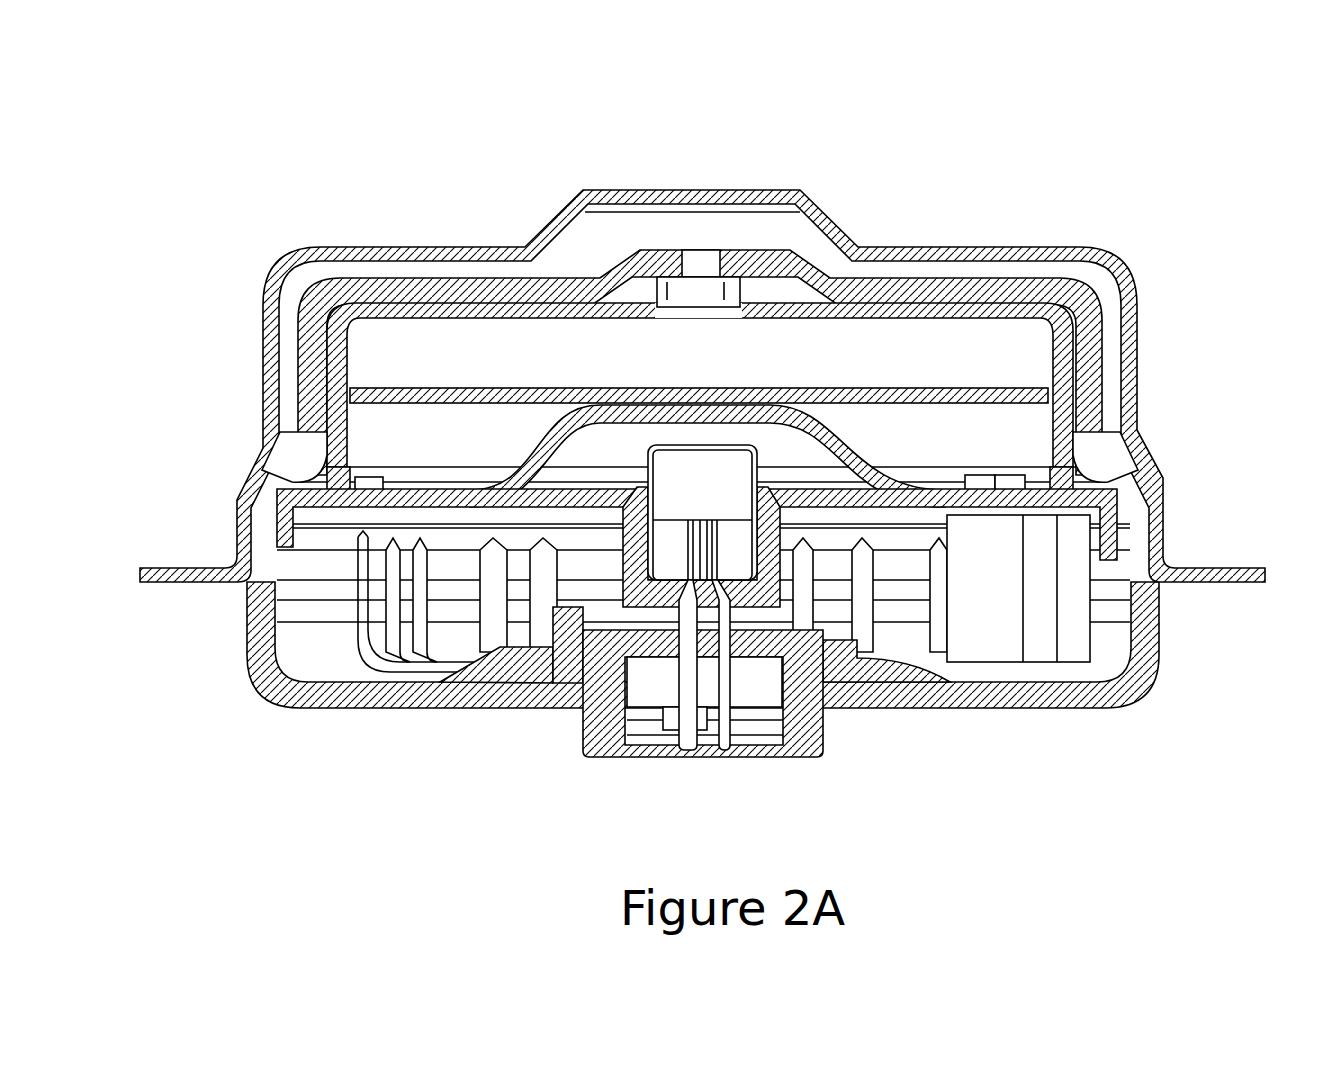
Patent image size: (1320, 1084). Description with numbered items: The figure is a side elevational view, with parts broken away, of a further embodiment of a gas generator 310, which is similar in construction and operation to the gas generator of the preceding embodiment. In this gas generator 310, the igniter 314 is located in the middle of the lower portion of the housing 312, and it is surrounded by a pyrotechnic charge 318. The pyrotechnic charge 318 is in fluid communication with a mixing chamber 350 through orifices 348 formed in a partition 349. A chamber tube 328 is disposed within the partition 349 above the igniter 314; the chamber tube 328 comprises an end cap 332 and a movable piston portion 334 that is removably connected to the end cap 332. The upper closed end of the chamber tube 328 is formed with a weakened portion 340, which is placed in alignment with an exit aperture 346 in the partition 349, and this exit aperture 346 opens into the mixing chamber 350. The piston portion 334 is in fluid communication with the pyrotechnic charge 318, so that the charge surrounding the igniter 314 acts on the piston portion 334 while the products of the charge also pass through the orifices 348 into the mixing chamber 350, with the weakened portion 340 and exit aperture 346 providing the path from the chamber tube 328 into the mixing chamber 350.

The gas generator 310 is at (885, 102).
The housing 312 is at (272, 682).
The igniter 314 is at (748, 727).
The pyrotechnic charge 318 is at (982, 642).
The chamber tube 328 is at (415, 313).
The end cap 332 is at (330, 477).
The piston portion 334 is at (430, 402).
The weakened portion 340 is at (700, 307).
The exit aperture 346 is at (705, 265).
The orifices 348 is at (300, 465).
The partition 349 is at (1078, 342).
The mixing chamber 350 is at (818, 232).